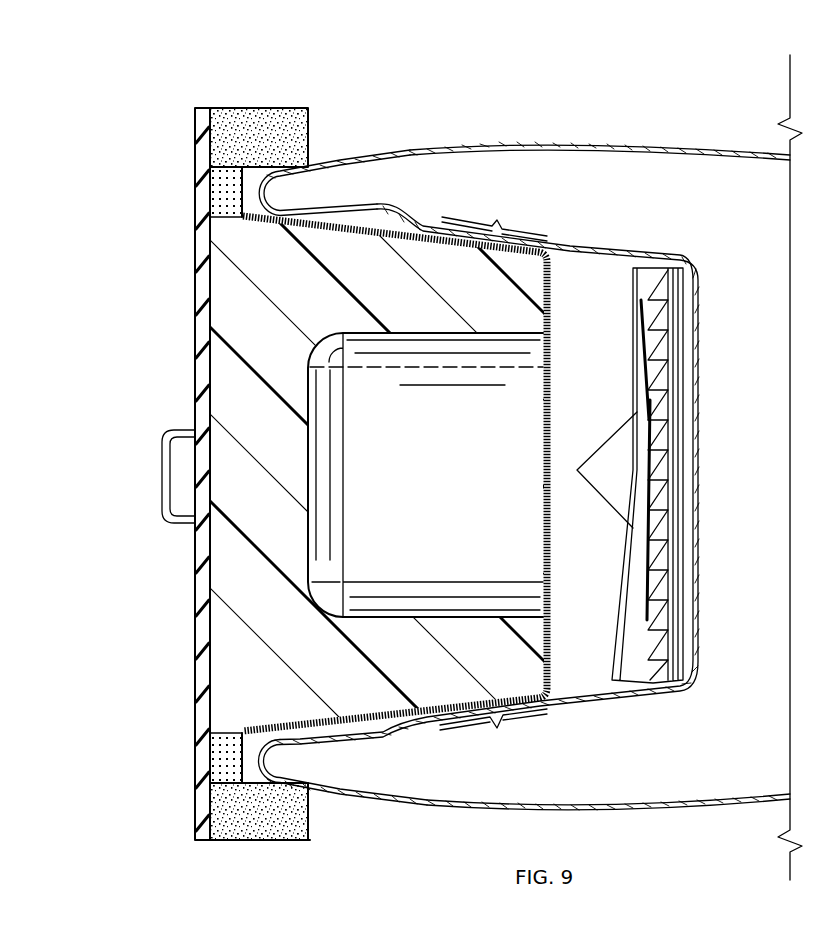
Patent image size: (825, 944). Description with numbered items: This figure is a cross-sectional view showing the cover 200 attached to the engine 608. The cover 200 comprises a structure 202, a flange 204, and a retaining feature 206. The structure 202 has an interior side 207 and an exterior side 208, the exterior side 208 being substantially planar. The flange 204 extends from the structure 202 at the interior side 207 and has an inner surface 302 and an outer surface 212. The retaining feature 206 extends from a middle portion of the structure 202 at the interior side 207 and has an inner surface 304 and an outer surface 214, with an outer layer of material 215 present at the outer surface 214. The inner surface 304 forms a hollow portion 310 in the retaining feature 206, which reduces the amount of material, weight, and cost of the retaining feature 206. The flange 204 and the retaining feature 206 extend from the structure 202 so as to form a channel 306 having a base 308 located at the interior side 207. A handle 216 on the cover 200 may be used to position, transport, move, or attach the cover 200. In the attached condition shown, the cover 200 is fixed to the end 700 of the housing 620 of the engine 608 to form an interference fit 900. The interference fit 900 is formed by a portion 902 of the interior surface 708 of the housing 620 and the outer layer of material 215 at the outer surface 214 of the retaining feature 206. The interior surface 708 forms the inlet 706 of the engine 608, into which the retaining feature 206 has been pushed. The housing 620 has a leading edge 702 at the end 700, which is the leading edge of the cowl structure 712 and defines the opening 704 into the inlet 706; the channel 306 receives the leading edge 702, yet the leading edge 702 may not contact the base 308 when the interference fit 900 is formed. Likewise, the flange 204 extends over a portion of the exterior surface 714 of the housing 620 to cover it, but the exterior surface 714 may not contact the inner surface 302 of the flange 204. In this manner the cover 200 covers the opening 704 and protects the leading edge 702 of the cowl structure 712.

The cover 200 is at (170, 312).
The structure 202 is at (190, 670).
The flange 204 is at (240, 842).
The retaining feature 206 is at (348, 276).
The interior side 207 is at (195, 590).
The exterior side 208 is at (195, 612).
The outer surface 212 is at (290, 108).
The outer surface 214 is at (417, 222).
The outer layer of material 215 is at (374, 221).
The handle 216 is at (160, 480).
The inner surface 302 is at (285, 767).
The inner surface 304 is at (522, 412).
The channel 306 is at (288, 786).
The base 308 is at (262, 785).
The hollow portion 310 is at (505, 500).
The engine 608 is at (413, 152).
The housing 620 is at (570, 143).
The end 700 is at (250, 176).
The leading edge 702 is at (258, 193).
The opening 704 is at (250, 205).
The inlet 706 is at (578, 578).
The interior surface 708 is at (362, 203).
The cowl structure 712 is at (360, 150).
The exterior surface 714 is at (480, 146).
The interference fit 900 is at (557, 260).
The portion 902 is at (493, 476).